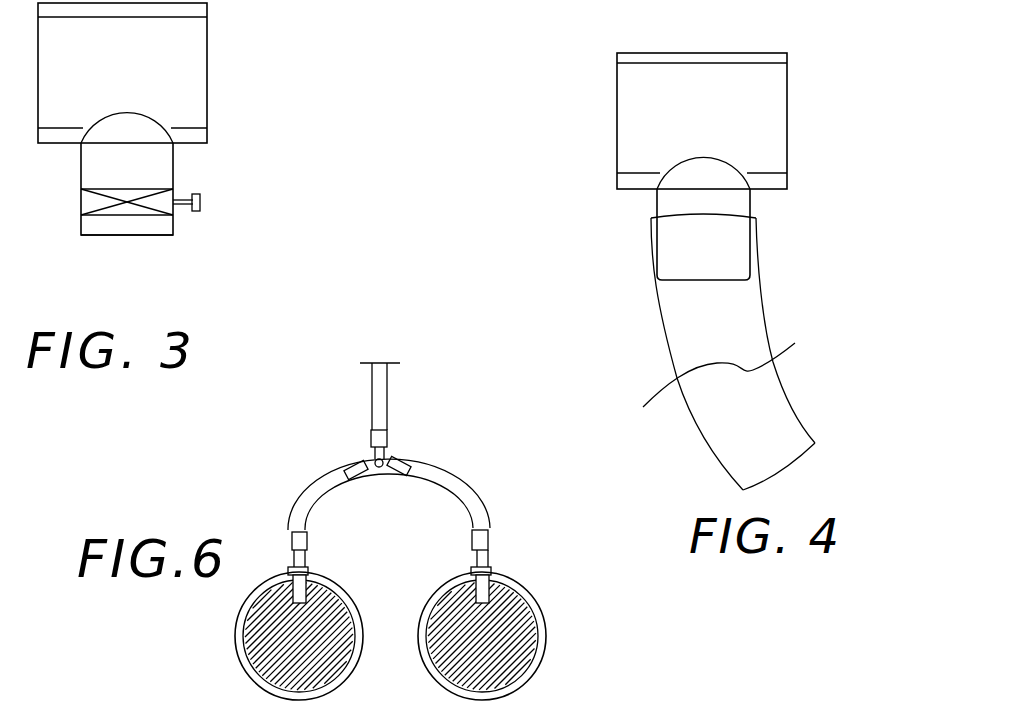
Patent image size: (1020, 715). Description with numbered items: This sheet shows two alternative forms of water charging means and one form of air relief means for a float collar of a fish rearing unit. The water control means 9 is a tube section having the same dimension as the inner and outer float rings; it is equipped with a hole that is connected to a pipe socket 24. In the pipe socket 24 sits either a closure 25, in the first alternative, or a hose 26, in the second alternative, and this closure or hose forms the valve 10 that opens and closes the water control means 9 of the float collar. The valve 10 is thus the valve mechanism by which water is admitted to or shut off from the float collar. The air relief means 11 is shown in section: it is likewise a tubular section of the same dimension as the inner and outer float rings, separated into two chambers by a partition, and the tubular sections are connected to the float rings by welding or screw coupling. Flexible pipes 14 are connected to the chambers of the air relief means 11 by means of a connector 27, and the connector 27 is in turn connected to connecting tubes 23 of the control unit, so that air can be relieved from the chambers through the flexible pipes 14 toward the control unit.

In FIG. 3, the water control means 9 is at (218, 61).
In FIG. 4, the water control means 9 is at (798, 109).
In FIG. 3, the valve mechanism 10 is at (185, 242).
In FIG. 4, the valve mechanism 10 is at (640, 258).
In FIG. 6, the air relief means 11 is at (535, 582).
In FIG. 6, the flexible pipe 14 is at (468, 497).
In FIG. 6, the connecting tube 23 is at (388, 400).
In FIG. 3, the pipe socket 24 is at (178, 165).
In FIG. 4, the pipe socket 24 is at (653, 201).
In FIG. 3, the closure 25 is at (180, 212).
In FIG. 4, the hose 26 is at (658, 322).
In FIG. 6, the connector 27 is at (388, 460).